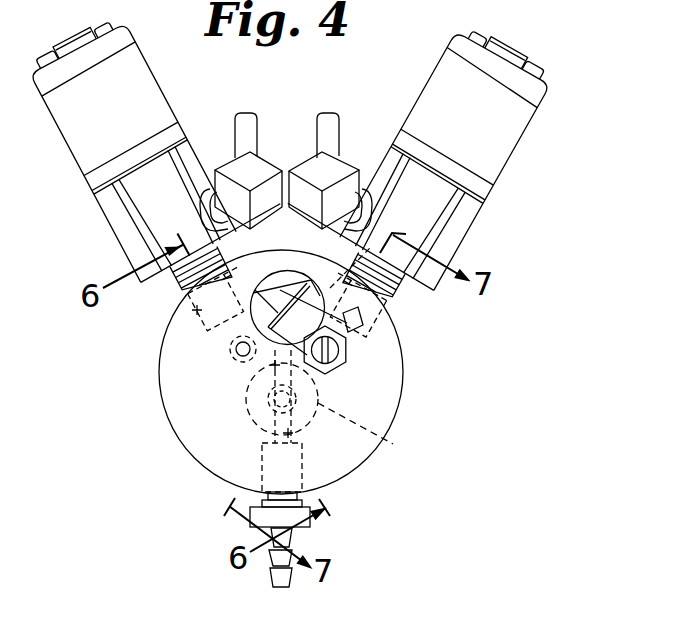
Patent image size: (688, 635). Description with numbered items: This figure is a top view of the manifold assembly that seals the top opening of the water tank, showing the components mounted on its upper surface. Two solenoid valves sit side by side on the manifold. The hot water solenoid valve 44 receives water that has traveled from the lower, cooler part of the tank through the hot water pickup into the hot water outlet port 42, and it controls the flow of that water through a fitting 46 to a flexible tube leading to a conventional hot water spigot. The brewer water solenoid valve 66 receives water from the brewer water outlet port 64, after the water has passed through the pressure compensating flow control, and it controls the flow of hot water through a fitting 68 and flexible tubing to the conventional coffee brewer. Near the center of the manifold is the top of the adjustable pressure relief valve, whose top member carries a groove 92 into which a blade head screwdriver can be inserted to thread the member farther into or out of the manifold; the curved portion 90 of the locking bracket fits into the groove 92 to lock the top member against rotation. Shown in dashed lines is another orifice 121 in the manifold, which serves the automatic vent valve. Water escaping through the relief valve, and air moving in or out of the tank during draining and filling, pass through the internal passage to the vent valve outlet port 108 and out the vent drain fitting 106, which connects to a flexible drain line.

The brewer water solenoid valve 66 is at (82, 148).
The hot water solenoid valve 44 is at (490, 167).
The fitting 68 is at (253, 128).
The fitting 46 is at (340, 140).
The brewer water outlet port 64 is at (195, 311).
The hot water outlet port 42 is at (366, 309).
The curved portion 90 is at (361, 311).
The groove 92 is at (228, 335).
The orifice 121 is at (340, 409).
The vent valve outlet port 108 is at (287, 468).
The vent drain fitting 106 is at (284, 583).